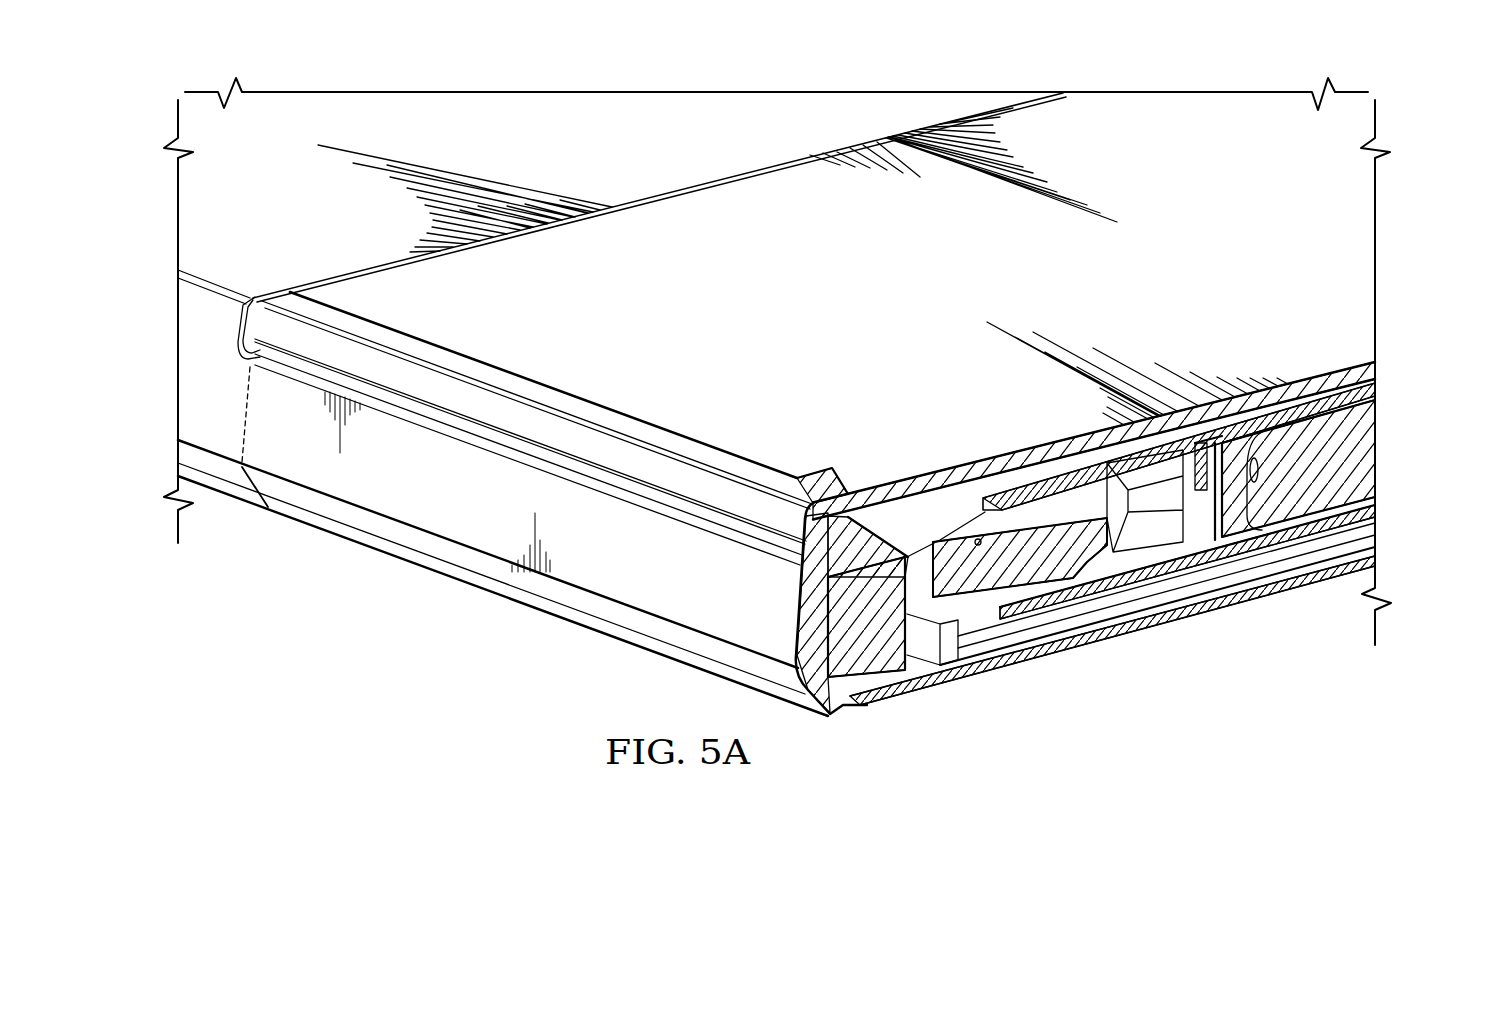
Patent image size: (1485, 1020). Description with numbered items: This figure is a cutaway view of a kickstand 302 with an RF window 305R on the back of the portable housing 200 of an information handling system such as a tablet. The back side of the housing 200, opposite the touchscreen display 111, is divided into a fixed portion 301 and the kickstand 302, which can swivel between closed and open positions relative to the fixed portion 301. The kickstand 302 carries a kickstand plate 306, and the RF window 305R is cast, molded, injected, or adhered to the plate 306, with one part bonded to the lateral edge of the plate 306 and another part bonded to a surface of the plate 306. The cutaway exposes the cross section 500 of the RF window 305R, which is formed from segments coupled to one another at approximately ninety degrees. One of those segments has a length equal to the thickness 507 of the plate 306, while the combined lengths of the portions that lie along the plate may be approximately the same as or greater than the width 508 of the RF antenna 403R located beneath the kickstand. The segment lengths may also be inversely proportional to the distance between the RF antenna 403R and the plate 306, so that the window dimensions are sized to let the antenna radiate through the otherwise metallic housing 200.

The housing 200 is at (196, 402).
The fixed portion 301 is at (316, 215).
The kickstand 302 is at (679, 181).
The RF window 305R is at (538, 428).
The kickstand plate 306 is at (684, 297).
The cross section 500 is at (823, 512).
The thickness 507 is at (1412, 380).
The width 508 is at (828, 680).
The RF antenna 403R is at (900, 655).
The touchscreen display 111 is at (1180, 627).